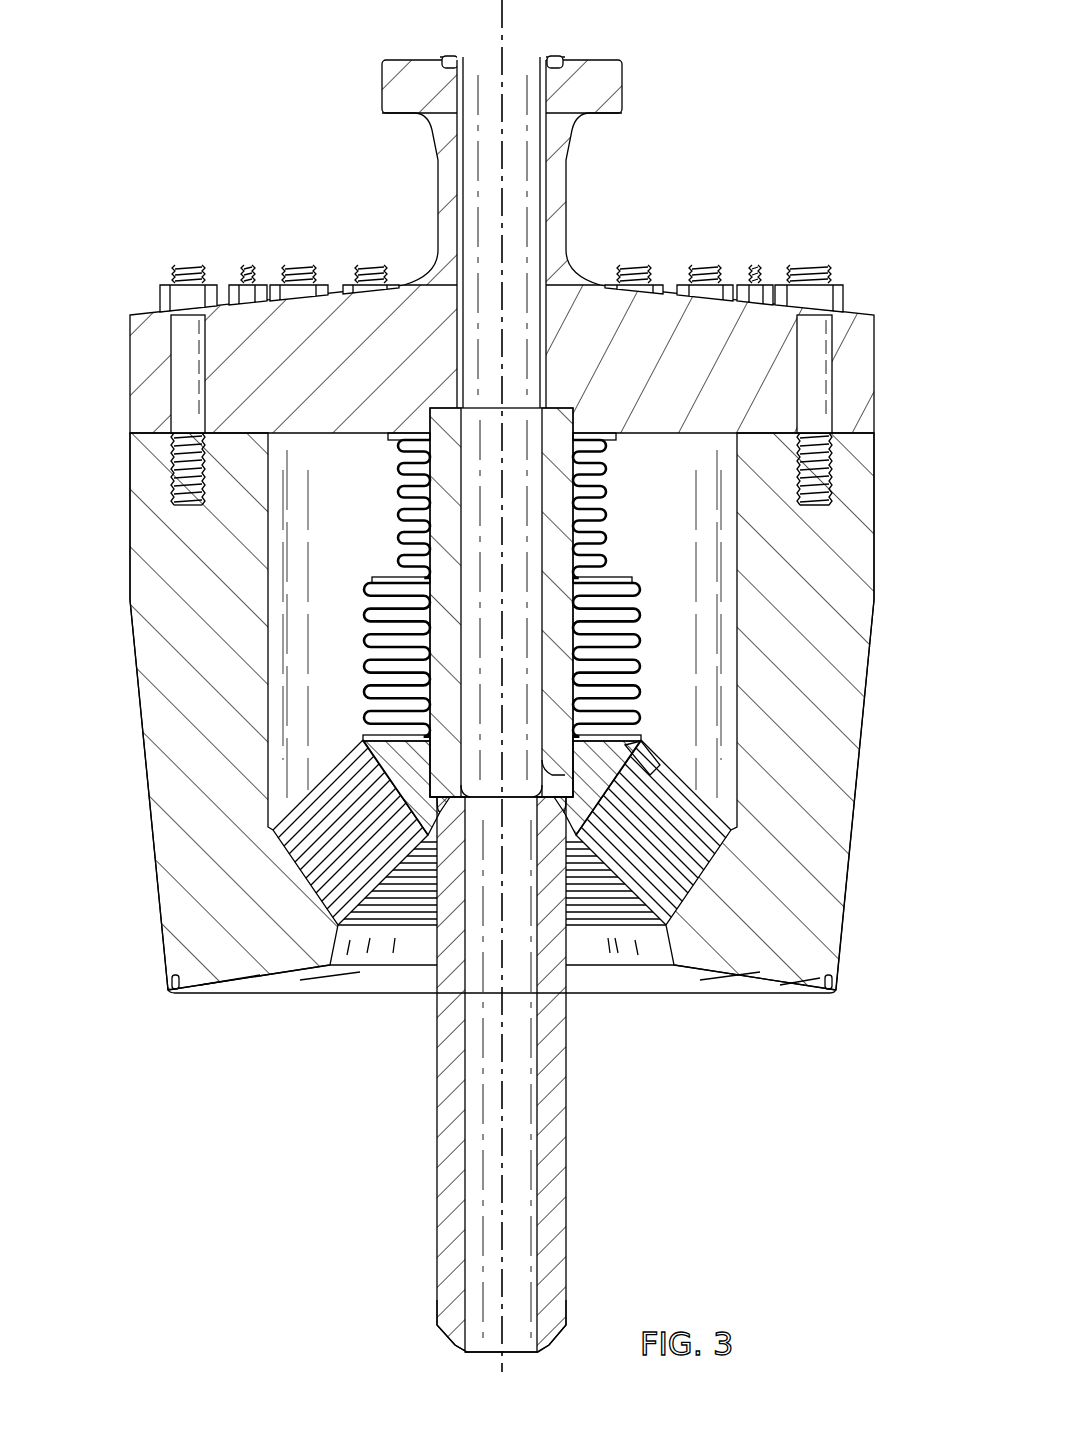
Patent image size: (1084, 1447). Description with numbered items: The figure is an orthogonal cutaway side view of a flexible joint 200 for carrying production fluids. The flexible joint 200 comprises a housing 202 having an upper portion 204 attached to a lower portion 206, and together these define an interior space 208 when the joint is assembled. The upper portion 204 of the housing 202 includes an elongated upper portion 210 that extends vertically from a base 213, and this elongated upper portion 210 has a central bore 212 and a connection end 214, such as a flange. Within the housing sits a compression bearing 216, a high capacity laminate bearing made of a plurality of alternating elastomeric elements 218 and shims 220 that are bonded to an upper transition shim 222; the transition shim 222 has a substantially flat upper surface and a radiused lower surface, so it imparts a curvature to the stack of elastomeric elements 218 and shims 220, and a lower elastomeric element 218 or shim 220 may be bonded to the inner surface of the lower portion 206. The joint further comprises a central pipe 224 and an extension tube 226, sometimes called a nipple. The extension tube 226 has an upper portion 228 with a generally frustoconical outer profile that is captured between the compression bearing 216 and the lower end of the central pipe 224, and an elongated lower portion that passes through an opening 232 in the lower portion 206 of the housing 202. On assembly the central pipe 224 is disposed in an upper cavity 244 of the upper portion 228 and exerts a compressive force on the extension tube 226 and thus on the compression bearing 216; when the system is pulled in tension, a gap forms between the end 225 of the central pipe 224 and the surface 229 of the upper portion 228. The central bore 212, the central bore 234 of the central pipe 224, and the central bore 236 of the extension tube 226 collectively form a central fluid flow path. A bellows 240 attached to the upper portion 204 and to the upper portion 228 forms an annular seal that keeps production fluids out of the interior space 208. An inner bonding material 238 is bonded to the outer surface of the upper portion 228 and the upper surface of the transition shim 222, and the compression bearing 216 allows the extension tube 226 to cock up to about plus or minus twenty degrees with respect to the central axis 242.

The flexible joint 200 is at (858, 127).
The housing 202 is at (128, 375).
The upper portion 204 is at (433, 225).
The lower portion 206 is at (128, 638).
The interior space 208 is at (689, 510).
The elongated upper portion 210 is at (571, 225).
The central bore 212 is at (526, 213).
The base 213 is at (868, 385).
The connection end 214 is at (603, 62).
The compression bearing 216 is at (690, 777).
The elastomeric elements 218 is at (655, 762).
The shims 220 is at (720, 812).
The upper transition shim 222 is at (620, 750).
The central pipe 224 is at (555, 405).
The end 225 is at (548, 790).
The extension tube 226 is at (568, 1162).
The upper portion 228 is at (395, 778).
The surface 229 is at (558, 772).
The opening 232 is at (397, 938).
The central bore 234 is at (526, 597).
The central bore 236 is at (526, 1050).
The inner bonding material 238 is at (575, 825).
The bellows 240 is at (632, 590).
The central axis 242 is at (500, 30).
The upper cavity 244 is at (445, 765).